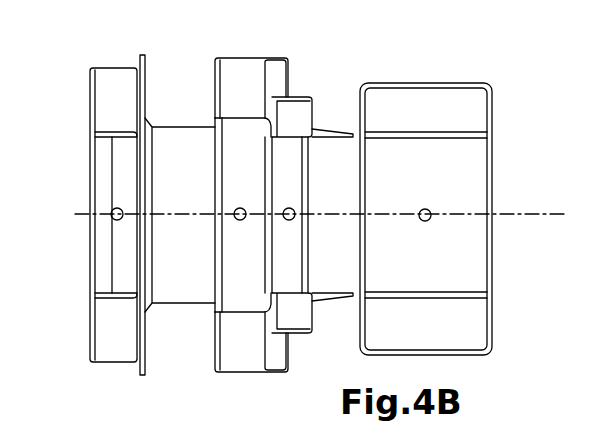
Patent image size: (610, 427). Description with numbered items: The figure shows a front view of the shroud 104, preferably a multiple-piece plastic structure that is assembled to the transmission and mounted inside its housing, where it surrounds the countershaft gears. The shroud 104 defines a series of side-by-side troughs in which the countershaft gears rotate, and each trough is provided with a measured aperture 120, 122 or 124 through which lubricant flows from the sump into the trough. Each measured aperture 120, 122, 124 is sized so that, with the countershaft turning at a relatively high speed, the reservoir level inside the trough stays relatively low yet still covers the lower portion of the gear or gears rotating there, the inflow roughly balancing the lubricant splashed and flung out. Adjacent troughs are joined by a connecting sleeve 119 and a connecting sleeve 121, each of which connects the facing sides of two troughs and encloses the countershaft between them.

The shroud 104 is at (309, 222).
The connecting sleeve 119 is at (177, 125).
The measured aperture 120 is at (113, 220).
The connecting sleeve 121 is at (337, 129).
The measured aperture 122 is at (285, 219).
The measured aperture 124 is at (431, 212).